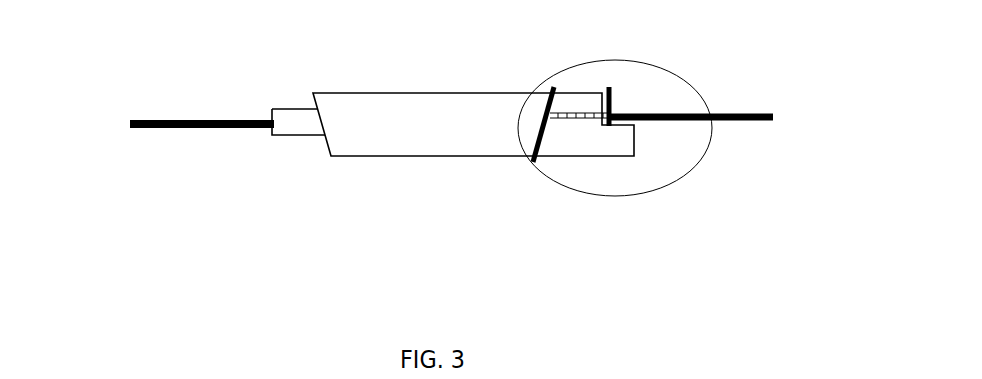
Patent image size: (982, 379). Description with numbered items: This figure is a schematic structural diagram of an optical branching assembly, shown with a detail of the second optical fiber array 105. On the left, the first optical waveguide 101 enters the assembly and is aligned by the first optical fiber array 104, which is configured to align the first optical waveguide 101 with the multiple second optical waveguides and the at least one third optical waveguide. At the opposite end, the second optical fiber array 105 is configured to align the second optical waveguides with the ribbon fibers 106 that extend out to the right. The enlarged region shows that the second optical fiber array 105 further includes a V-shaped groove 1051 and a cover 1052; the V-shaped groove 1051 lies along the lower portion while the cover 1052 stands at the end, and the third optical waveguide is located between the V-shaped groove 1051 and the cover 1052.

The first optical waveguide 101 is at (156, 131).
The first optical fiber array 104 is at (252, 143).
The second optical fiber array 105 is at (552, 178).
The V-shaped groove 1051 is at (585, 157).
The cover 1052 is at (609, 87).
The ribbon fibers 106 is at (722, 110).